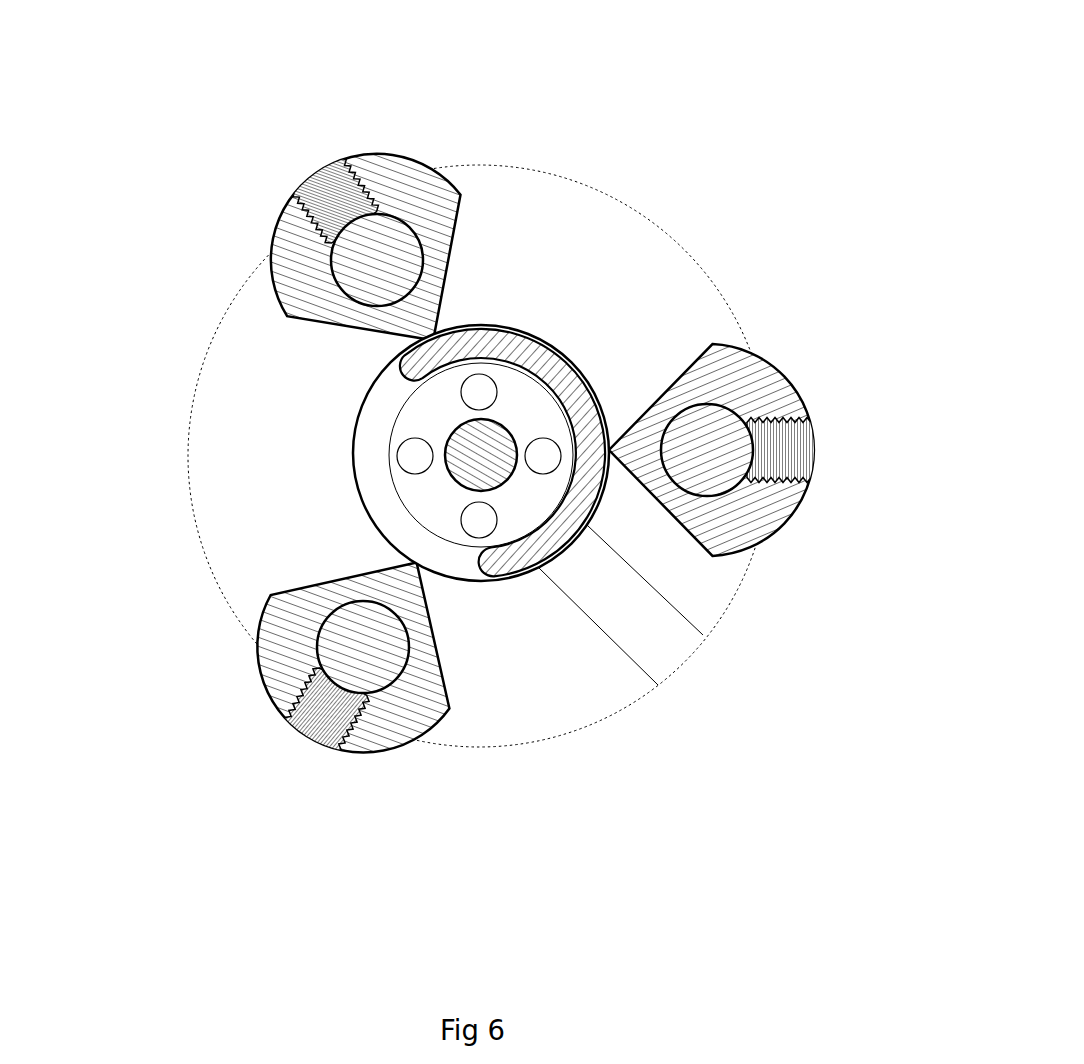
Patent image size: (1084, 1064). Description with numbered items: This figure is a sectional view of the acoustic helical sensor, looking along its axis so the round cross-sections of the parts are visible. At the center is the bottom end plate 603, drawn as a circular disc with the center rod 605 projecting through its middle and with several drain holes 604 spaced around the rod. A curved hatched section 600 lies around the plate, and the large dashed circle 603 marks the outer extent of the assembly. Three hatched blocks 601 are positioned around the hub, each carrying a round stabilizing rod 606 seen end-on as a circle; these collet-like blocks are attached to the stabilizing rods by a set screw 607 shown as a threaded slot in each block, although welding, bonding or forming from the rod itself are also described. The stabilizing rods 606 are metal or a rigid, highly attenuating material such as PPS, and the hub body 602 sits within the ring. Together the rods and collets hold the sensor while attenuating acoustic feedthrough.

The coupling hub assembly 600 is at (425, 340).
The clamping jaw block 601 is at (403, 193).
The hub body 602 is at (552, 343).
The bottom end plate 603 is at (636, 319).
The drain holes 604 is at (408, 451).
The center rod 605 is at (472, 460).
The stabilizing rod 606 is at (377, 263).
The set screw 607 is at (330, 190).